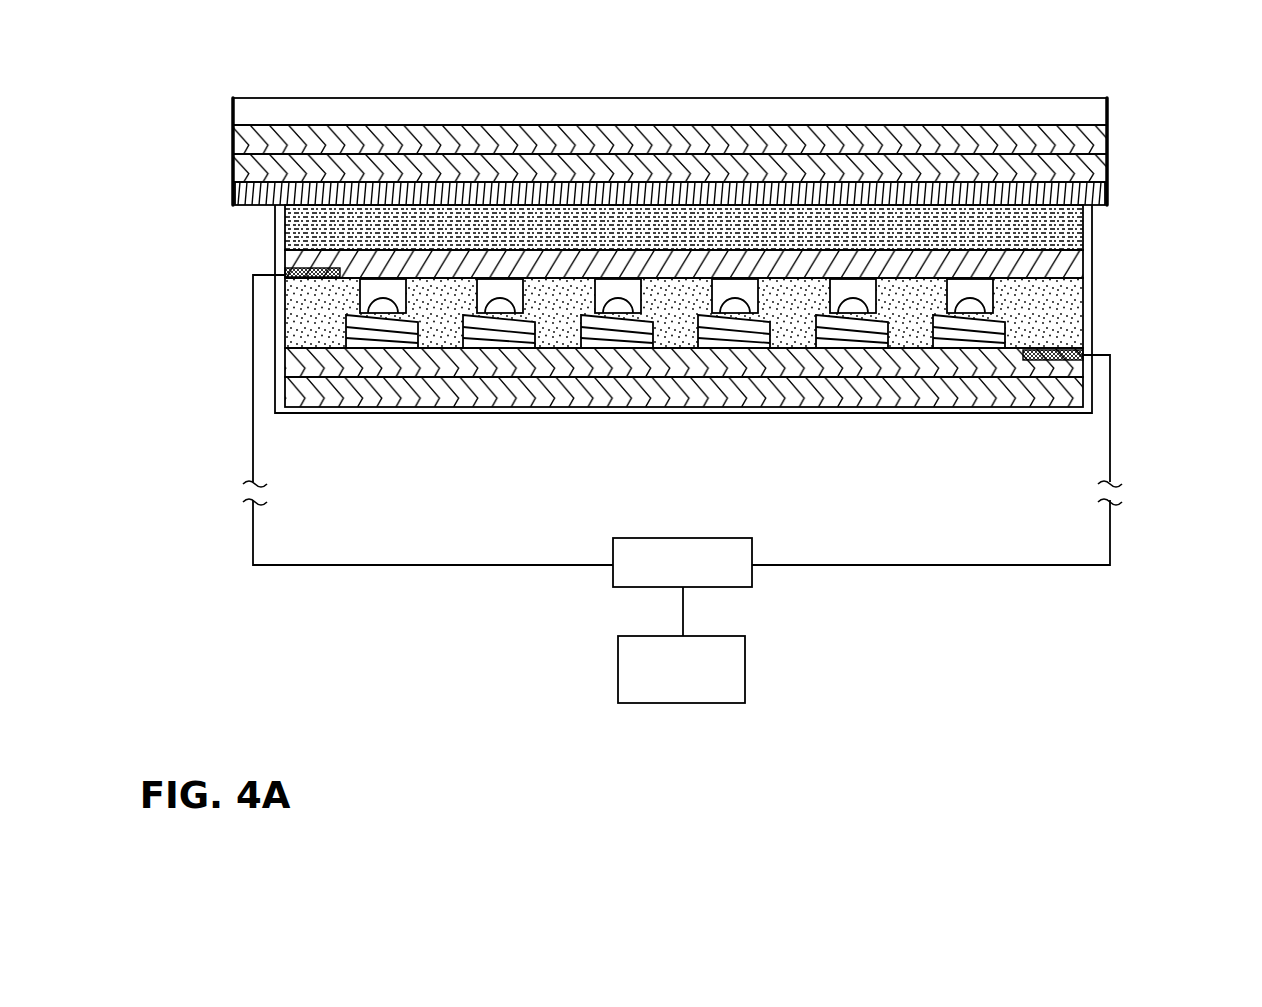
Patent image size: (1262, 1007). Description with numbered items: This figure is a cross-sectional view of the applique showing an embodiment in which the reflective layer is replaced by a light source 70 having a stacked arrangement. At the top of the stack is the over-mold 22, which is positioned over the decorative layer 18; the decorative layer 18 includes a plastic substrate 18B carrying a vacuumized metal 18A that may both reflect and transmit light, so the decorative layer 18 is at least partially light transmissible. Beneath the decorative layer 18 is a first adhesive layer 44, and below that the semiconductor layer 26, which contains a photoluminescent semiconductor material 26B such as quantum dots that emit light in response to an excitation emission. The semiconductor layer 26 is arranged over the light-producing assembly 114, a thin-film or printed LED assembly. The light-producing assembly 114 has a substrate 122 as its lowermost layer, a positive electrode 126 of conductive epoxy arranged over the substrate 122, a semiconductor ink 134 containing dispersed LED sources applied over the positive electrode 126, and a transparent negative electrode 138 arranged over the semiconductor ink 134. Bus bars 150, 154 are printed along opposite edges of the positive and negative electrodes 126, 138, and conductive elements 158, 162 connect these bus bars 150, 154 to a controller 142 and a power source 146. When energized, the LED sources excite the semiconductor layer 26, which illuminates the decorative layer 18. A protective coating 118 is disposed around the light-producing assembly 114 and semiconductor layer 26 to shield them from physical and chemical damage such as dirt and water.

The light source 70 is at (1222, 240).
The protective coating 118 is at (1100, 195).
The over-mold 22 is at (243, 112).
The decorative layer 18 is at (1125, 127).
The vacuumized metal 18A is at (248, 140).
The plastic substrate 18B is at (245, 165).
The first adhesive layer 44 is at (236, 190).
The light-producing assembly 114 is at (198, 412).
The substrate 122 is at (1080, 395).
The semiconductor layer 26 is at (1093, 218).
The photoluminescent semiconductor material 26B is at (1055, 230).
The negative electrode 138 is at (1077, 266).
The semiconductor ink 134 is at (1085, 307).
The bus bar 154 is at (286, 274).
The bus bar 150 is at (1085, 353).
The positive electrode 126 is at (1085, 368).
The conductive element 162 is at (253, 450).
The conductive element 158 is at (1111, 452).
The controller 142 is at (752, 580).
The power source 146 is at (745, 655).